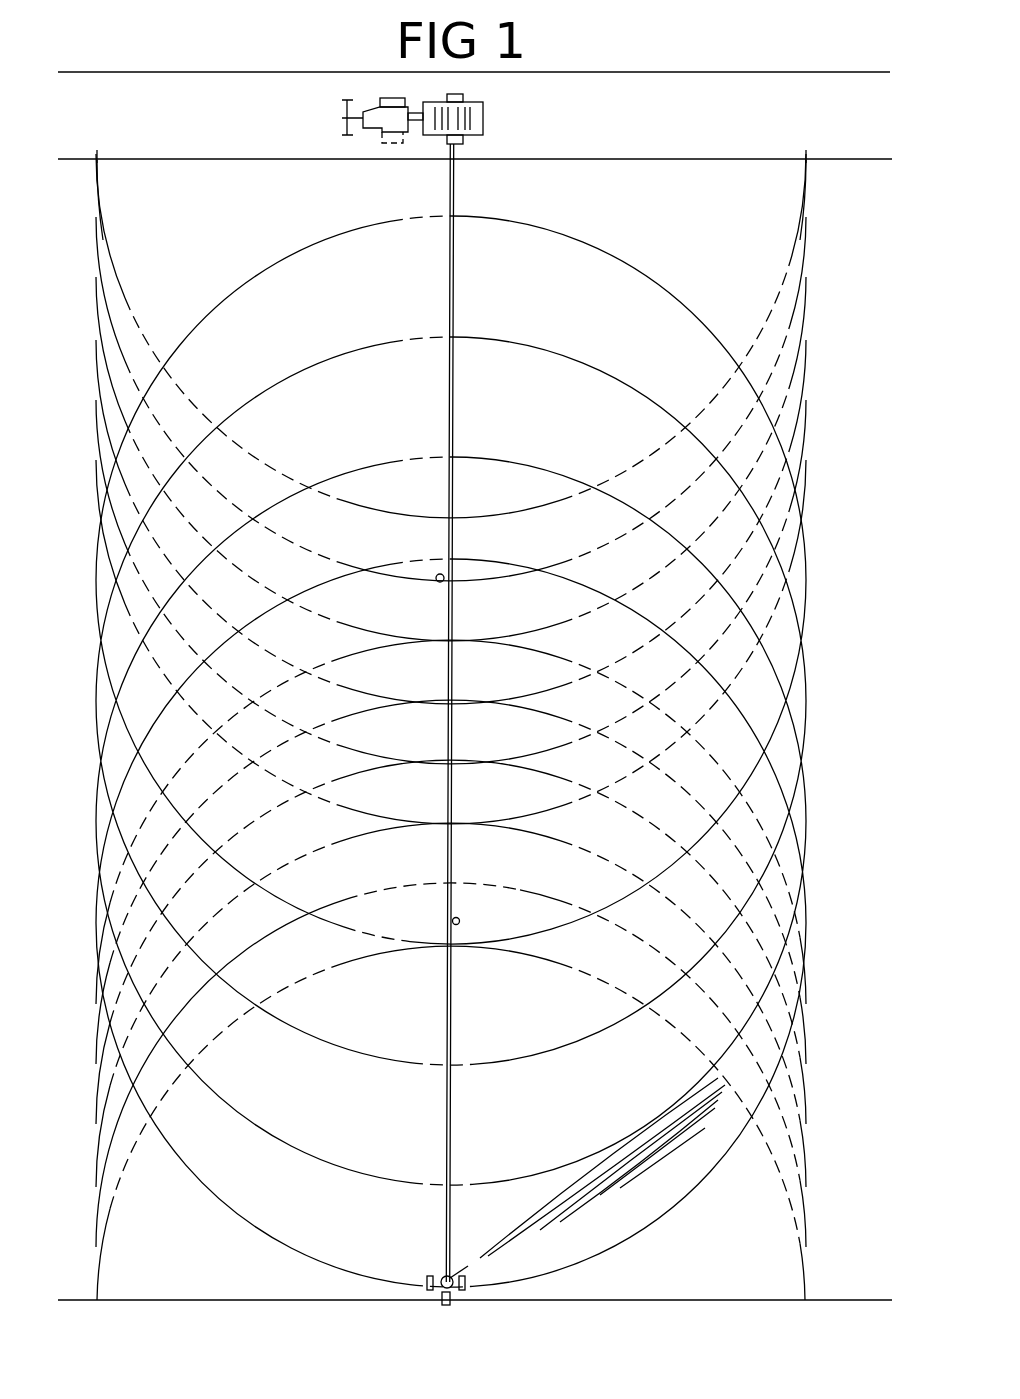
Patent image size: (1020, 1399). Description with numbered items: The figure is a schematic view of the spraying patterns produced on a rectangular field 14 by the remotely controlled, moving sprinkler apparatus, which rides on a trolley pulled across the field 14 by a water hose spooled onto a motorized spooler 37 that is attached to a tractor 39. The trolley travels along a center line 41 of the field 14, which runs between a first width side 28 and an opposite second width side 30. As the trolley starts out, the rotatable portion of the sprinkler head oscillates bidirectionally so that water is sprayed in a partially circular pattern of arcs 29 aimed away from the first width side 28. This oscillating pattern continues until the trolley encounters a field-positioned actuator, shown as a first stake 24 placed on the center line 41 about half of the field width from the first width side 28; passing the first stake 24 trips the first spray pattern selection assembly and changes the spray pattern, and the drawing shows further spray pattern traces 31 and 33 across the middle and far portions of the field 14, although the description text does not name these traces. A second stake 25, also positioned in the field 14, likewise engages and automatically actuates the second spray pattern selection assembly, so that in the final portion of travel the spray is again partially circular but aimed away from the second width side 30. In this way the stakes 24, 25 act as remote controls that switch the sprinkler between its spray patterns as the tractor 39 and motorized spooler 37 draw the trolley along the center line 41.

The field 14 is at (738, 256).
The first field-positioned actuator 24 is at (460, 920).
The second field-positioned actuator 25 is at (436, 577).
The first width side 28 is at (577, 1302).
The arcs 29 is at (250, 946).
The second width side 30 is at (622, 159).
The front band loops 31 is at (280, 383).
The rear band loops 33 is at (700, 396).
The motorized spooler 37 is at (483, 112).
The tractor 39 is at (342, 116).
The center line 41 is at (455, 313).